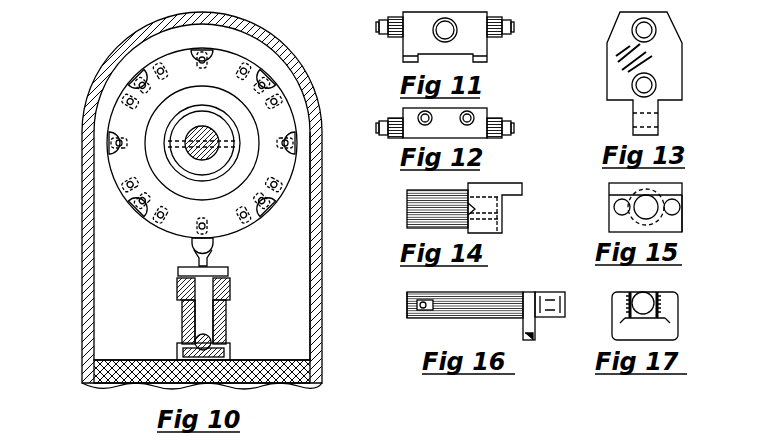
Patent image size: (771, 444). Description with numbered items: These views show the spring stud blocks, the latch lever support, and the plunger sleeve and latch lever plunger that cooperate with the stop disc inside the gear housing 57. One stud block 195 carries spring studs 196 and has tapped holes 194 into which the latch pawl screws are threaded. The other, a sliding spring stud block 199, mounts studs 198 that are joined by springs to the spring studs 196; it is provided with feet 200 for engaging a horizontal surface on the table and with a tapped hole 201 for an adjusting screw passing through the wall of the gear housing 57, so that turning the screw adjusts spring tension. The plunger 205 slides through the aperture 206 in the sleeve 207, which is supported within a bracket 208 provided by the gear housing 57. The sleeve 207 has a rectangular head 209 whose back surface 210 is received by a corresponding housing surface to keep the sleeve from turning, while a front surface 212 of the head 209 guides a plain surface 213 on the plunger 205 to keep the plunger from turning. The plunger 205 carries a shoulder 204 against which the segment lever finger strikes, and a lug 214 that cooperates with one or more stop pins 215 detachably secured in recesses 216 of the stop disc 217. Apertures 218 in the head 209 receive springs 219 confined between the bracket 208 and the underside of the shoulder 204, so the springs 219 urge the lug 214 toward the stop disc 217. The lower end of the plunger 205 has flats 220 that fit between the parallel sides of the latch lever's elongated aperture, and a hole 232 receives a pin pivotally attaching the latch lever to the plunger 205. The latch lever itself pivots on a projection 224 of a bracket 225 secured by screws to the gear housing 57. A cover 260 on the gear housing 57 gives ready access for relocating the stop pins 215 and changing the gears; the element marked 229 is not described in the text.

In FIG. 10, the gear housing 57 is at (297, 320).
In FIG. 10, the cover 260 is at (99, 73).
In FIG. 12, the tapped holes 194 is at (471, 112).
In FIG. 12, the stud block 195 is at (410, 115).
In FIG. 12, the spring studs 196 is at (383, 128).
In FIG. 11, the studs 198 is at (386, 29).
In FIG. 11, the sliding spring stud block 199 is at (476, 46).
In FIG. 11, the feet 200 is at (411, 59).
In FIG. 11, the tapped hole 201 is at (441, 29).
In FIG. 16, the shoulder 204 is at (536, 333).
In FIG. 10, the plunger 205 is at (173, 321).
In FIG. 16, the plunger 205 is at (495, 313).
In FIG. 15, the aperture 206 is at (645, 210).
In FIG. 14, the sleeve 207 is at (415, 229).
In FIG. 10, the bracket 208 is at (228, 314).
In FIG. 14, the rectangular head 209 is at (495, 234).
In FIG. 15, the rectangular head 209 is at (683, 203).
In FIG. 15, the back surface 210 is at (655, 186).
In FIG. 14, the front surface 212 is at (506, 196).
In FIG. 16, the plain surface 213 is at (528, 292).
In FIG. 10, the lug 214 is at (199, 264).
In FIG. 16, the lug 214 is at (556, 300).
In FIG. 17, the lug 214 is at (642, 297).
In FIG. 10, the stop pins 215 is at (194, 245).
In FIG. 10, the recesses 216 is at (255, 226).
In FIG. 10, the stop disc 217 is at (289, 172).
In FIG. 15, the apertures 218 is at (615, 203).
In FIG. 10, the springs 219 is at (228, 284).
In FIG. 16, the flats 220 is at (425, 311).
In FIG. 13, the projection 224 is at (651, 119).
In FIG. 13, the bracket 225 is at (680, 59).
In FIG. 13, the slot 229 is at (632, 129).
In FIG. 16, the hole 232 is at (416, 303).